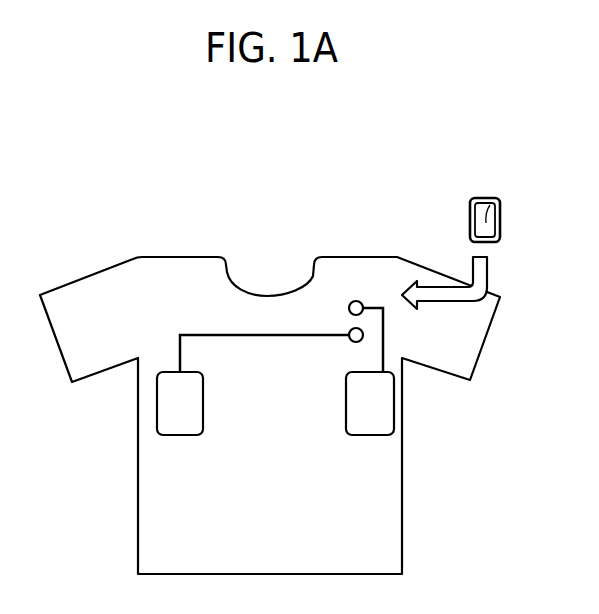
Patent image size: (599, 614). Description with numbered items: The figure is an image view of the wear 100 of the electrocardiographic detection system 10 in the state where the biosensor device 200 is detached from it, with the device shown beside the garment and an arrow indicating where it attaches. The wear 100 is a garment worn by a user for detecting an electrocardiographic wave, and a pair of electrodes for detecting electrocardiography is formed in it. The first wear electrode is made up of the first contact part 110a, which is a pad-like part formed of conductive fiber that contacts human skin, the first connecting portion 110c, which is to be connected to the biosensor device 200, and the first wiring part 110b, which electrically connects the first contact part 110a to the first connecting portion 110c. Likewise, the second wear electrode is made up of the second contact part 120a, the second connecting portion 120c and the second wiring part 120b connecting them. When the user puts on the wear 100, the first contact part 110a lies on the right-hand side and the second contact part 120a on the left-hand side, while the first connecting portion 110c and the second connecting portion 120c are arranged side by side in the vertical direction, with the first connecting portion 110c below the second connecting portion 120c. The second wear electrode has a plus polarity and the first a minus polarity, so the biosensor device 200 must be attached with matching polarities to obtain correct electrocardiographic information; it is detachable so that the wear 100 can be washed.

The electrocardiographic detection system 10 is at (252, 228).
The wear 100 is at (158, 530).
The first contact part 110a is at (173, 418).
The first wiring part 110b is at (223, 333).
The first connecting portion 110c is at (356, 342).
The second contact part 120a is at (373, 420).
The second wiring part 120b is at (388, 322).
The second connecting portion 120c is at (357, 301).
The biosensor device 200 is at (496, 200).